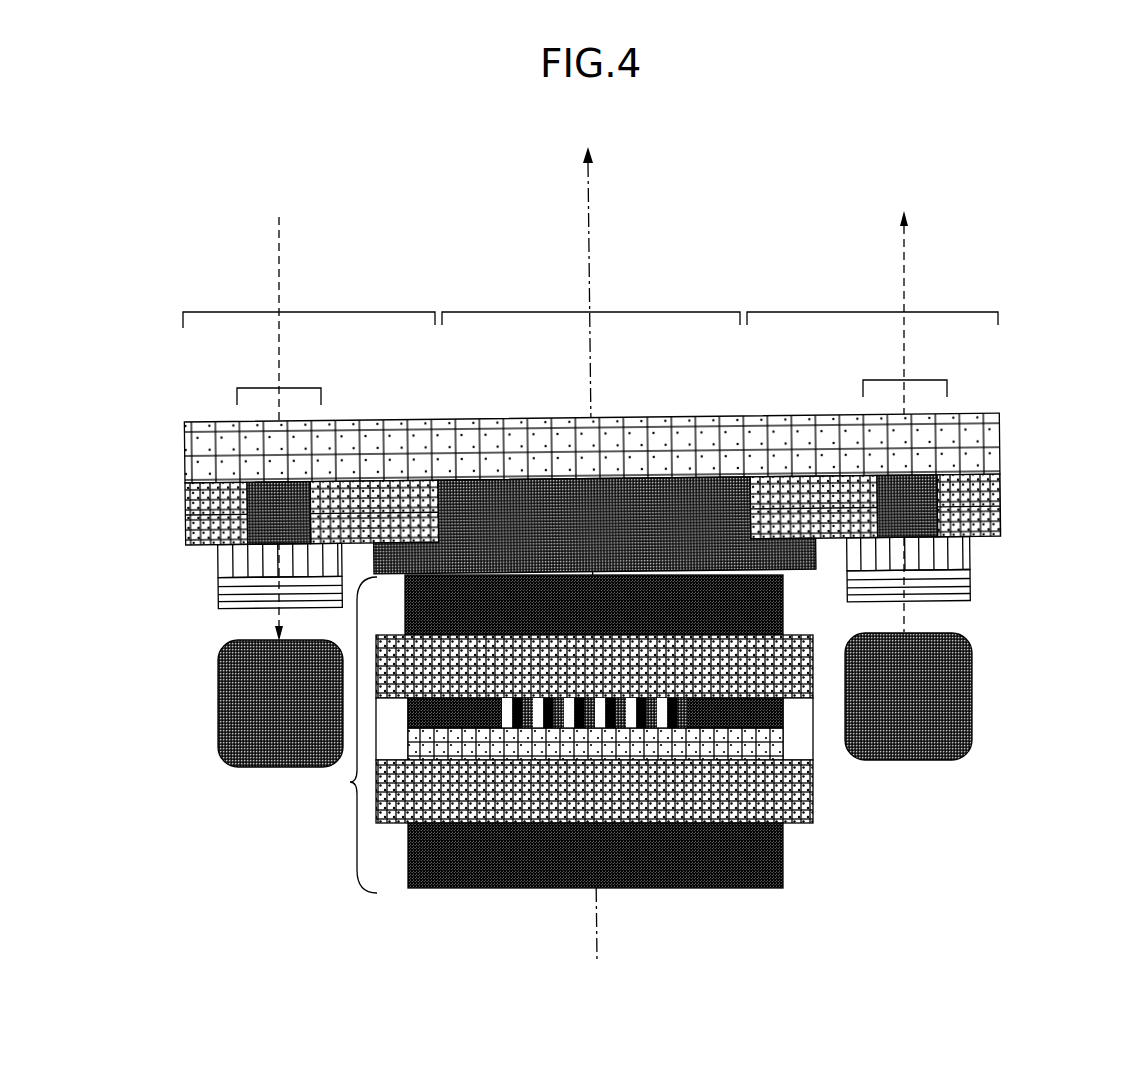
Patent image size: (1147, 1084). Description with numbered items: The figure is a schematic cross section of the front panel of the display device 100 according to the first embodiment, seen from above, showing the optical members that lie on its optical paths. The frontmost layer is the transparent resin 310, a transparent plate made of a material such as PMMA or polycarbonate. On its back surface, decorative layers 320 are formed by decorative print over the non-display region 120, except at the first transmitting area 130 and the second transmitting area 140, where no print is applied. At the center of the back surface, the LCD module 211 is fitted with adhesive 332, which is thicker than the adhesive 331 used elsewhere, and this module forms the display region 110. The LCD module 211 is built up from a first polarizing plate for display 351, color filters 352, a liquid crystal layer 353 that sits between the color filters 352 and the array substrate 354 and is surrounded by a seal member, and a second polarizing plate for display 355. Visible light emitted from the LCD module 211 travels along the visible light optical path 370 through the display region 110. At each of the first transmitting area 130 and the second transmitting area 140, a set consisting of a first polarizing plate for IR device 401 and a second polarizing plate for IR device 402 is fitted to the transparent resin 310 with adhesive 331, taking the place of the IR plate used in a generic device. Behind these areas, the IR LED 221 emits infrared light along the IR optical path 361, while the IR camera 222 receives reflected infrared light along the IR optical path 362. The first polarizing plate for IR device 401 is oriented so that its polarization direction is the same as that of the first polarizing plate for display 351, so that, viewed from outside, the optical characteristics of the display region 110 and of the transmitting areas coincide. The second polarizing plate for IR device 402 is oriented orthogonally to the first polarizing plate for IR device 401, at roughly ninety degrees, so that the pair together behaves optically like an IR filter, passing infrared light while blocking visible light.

The display device 100 is at (610, 130).
The display region 110 is at (660, 307).
The non-display region 120 is at (370, 309).
The first transmitting area 130 is at (933, 380).
The second transmitting area 140 is at (305, 388).
The LCD module 211 is at (350, 780).
The IR LED 221 is at (960, 692).
The IR camera 222 is at (238, 707).
The transparent resin 310 is at (982, 448).
The decorative layers 320 is at (993, 490).
The adhesive 331 is at (267, 500).
The adhesive 332 is at (715, 500).
The first polarizing plate for display 351 is at (765, 603).
The color filters 352 is at (790, 667).
The liquid crystal layer 353 is at (775, 742).
The array substrate 354 is at (787, 792).
The second polarizing plate for display 355 is at (768, 853).
The IR optical path 361 is at (907, 264).
The IR optical path 362 is at (281, 264).
The visible light optical path 370 is at (590, 230).
The first polarizing plate for IR device 401 is at (222, 572).
The second polarizing plate for IR device 402 is at (222, 600).